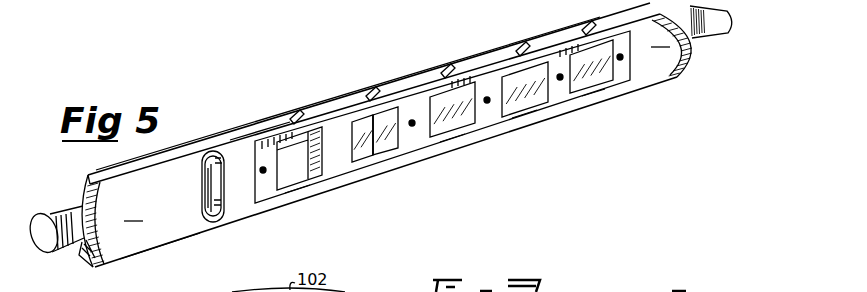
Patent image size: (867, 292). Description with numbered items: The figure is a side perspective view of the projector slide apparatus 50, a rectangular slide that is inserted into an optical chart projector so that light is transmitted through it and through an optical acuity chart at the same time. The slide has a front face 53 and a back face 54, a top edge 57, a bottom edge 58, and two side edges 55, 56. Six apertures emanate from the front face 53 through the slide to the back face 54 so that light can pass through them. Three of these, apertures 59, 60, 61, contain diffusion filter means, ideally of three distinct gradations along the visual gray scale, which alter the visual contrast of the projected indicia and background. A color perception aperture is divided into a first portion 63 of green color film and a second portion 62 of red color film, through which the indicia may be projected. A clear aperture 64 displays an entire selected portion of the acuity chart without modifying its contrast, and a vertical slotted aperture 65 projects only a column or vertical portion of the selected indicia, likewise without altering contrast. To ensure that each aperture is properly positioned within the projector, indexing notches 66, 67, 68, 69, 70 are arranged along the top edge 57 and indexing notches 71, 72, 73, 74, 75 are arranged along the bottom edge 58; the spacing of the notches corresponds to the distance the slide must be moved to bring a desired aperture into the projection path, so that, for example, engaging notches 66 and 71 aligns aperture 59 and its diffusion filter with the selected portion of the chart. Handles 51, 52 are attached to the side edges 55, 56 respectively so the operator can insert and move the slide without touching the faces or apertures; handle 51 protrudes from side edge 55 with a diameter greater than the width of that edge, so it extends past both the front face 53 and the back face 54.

The projector slide apparatus 50 is at (393, 140).
The handle 51 is at (728, 19).
The handle 52 is at (63, 215).
The front face 53 is at (382, 135).
The back face 54 is at (252, 124).
The side edge 55 is at (690, 52).
The side edge 56 is at (85, 188).
The top edge 57 is at (188, 146).
The bottom edge 58 is at (150, 253).
The aperture 59 is at (600, 86).
The aperture 60 is at (538, 107).
The aperture 61 is at (466, 130).
The second portion of color perception aperture 62 is at (390, 152).
The first portion of color perception aperture 63 is at (356, 160).
The clear aperture 64 is at (304, 177).
The vertical slotted aperture 65 is at (213, 222).
The indexing notch 66 is at (589, 25).
The indexing notch 67 is at (522, 46).
The indexing notch 68 is at (446, 70).
The indexing notch 69 is at (371, 89).
The indexing notch 70 is at (295, 114).
The indexing notch 71 is at (594, 100).
The indexing notch 72 is at (524, 122).
The indexing notch 73 is at (455, 148).
The indexing notch 74 is at (375, 176).
The indexing notch 75 is at (299, 198).